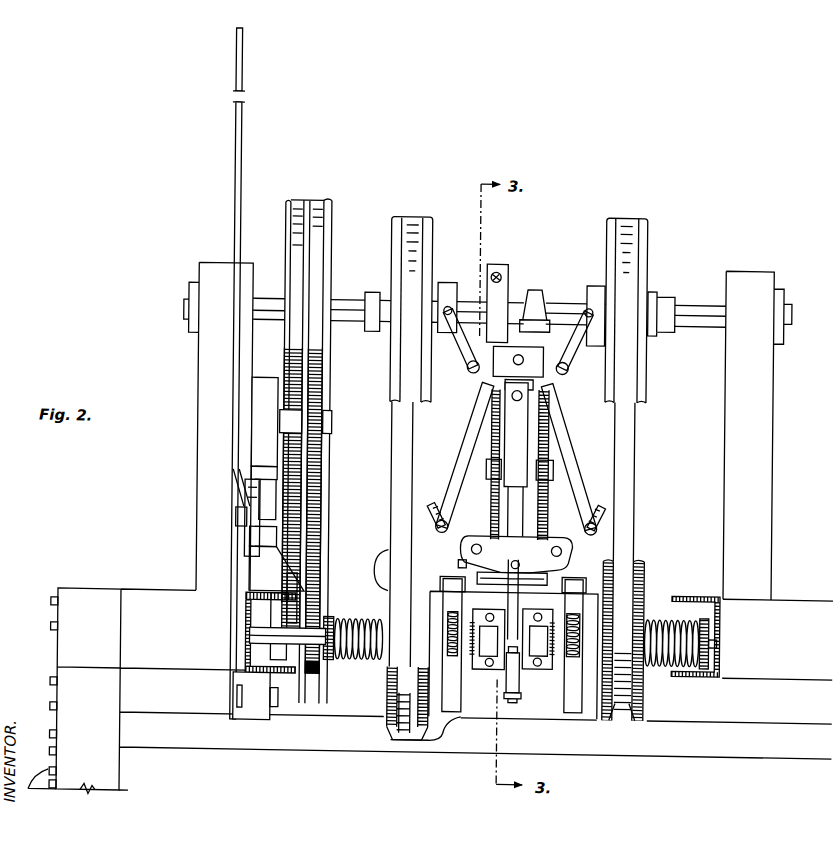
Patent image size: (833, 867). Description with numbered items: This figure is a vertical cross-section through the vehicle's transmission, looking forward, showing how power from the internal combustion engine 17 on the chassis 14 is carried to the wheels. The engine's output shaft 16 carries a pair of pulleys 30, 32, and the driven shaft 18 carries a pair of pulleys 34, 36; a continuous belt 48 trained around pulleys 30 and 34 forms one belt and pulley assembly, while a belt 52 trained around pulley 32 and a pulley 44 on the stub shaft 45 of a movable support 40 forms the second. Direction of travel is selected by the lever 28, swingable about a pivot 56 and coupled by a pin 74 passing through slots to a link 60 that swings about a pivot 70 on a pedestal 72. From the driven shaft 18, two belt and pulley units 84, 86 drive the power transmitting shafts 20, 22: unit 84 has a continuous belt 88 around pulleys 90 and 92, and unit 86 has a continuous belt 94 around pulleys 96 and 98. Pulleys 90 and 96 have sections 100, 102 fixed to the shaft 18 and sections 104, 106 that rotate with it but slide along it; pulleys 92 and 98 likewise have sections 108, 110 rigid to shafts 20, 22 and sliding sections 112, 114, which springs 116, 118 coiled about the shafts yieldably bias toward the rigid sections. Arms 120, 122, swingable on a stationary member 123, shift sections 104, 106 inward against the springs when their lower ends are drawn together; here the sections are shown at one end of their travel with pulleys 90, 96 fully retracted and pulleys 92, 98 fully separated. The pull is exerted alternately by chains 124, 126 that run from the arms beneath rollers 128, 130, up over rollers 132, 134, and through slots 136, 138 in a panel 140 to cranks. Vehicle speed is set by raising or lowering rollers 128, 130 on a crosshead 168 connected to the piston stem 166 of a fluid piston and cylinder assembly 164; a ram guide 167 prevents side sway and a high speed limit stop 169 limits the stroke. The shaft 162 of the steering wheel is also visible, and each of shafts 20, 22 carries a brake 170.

The chassis 14 is at (803, 585).
The output shaft 16 is at (322, 599).
The internal combustion engine 17 is at (401, 500).
The driven shaft 18 is at (700, 296).
The power transmitting shaft 20 is at (717, 637).
The power transmitting shaft 22 is at (262, 629).
The lever 28 is at (229, 169).
The pulley 30 is at (303, 504).
The pulley 32 is at (320, 541).
The pulley 34 is at (281, 233).
The pulley 36 is at (328, 251).
The movable support 40 is at (261, 447).
The pulley 44 is at (302, 413).
The stub shaft 45 is at (330, 423).
The continuous belt 48 is at (296, 202).
The belt 52 is at (314, 519).
The pivot 56 is at (238, 693).
The link 60 is at (250, 534).
The pivot 70 is at (250, 536).
The pedestal 72 is at (268, 572).
The pin 74 is at (236, 515).
The belt and pulley unit 84 is at (641, 442).
The belt and pulley unit 86 is at (387, 437).
The continuous belt 88 is at (636, 469).
The pulley 90 is at (650, 240).
The pulley 92 is at (652, 554).
The continuous belt 94 is at (397, 469).
The pulley 96 is at (386, 222).
The pulley 98 is at (375, 587).
The section 100 is at (645, 222).
The section 102 is at (388, 268).
The section 104 is at (603, 248).
The section 106 is at (420, 245).
The section 108 is at (618, 713).
The section 110 is at (424, 727).
The section 112 is at (645, 701).
The section 114 is at (388, 668).
The spring 116 is at (690, 591).
The spring 118 is at (328, 658).
The arm 120 is at (568, 445).
The arm 122 is at (460, 449).
The stationary member 123 is at (465, 367).
The chain 124 is at (550, 511).
The chain 126 is at (478, 485).
The roller 128 is at (552, 547).
The roller 130 is at (479, 548).
The roller 132 is at (518, 453).
The roller 134 is at (497, 477).
The slot 136 is at (543, 410).
The slot 138 is at (490, 406).
The panel 140 is at (552, 471).
The shaft 162 is at (500, 262).
The fluid piston and cylinder assembly 164 is at (566, 369).
The piston stem 166 is at (519, 599).
The ram guide 167 is at (508, 599).
The crosshead 168 is at (465, 563).
The high speed limit stop 169 is at (517, 695).
The brake 170 is at (576, 710).